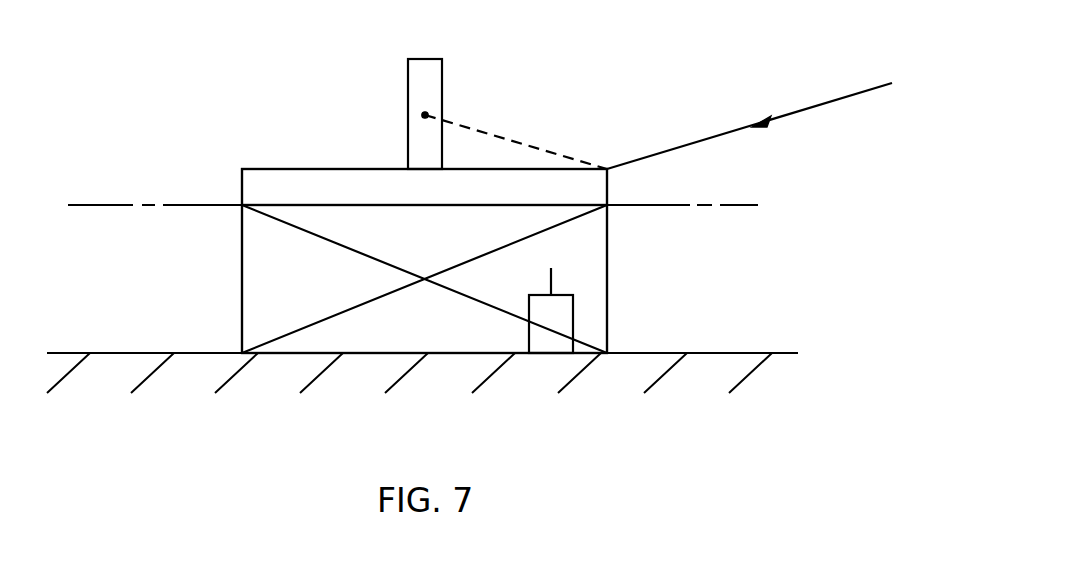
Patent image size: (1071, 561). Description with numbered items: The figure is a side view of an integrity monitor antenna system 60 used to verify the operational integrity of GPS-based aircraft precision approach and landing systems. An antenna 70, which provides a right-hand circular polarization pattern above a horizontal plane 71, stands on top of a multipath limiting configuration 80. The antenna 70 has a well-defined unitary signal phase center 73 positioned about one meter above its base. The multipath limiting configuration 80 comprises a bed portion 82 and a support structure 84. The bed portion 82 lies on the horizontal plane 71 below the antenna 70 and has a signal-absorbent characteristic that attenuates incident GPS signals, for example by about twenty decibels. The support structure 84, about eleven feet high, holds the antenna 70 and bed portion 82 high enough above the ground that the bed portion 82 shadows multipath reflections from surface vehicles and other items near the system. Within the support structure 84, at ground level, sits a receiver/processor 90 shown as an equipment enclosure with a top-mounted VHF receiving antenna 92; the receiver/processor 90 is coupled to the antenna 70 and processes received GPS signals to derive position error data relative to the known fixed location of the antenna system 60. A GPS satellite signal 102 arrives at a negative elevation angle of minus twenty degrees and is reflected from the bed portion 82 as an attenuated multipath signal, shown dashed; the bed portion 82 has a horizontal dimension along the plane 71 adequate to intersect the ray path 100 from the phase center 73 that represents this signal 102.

The integrity monitor antenna system 60 is at (306, 50).
The antenna 70 is at (443, 73).
The horizontal plane 71 is at (732, 203).
The phase center 73 is at (423, 114).
The multipath limiting configuration 80 is at (240, 170).
The bed portion 82 is at (320, 168).
The support structure 84 is at (240, 270).
The receiver/processor 90 is at (573, 318).
The VHF receiving antenna 92 is at (552, 273).
The ray path 100 is at (505, 140).
The GPS satellite signal 102 is at (798, 112).